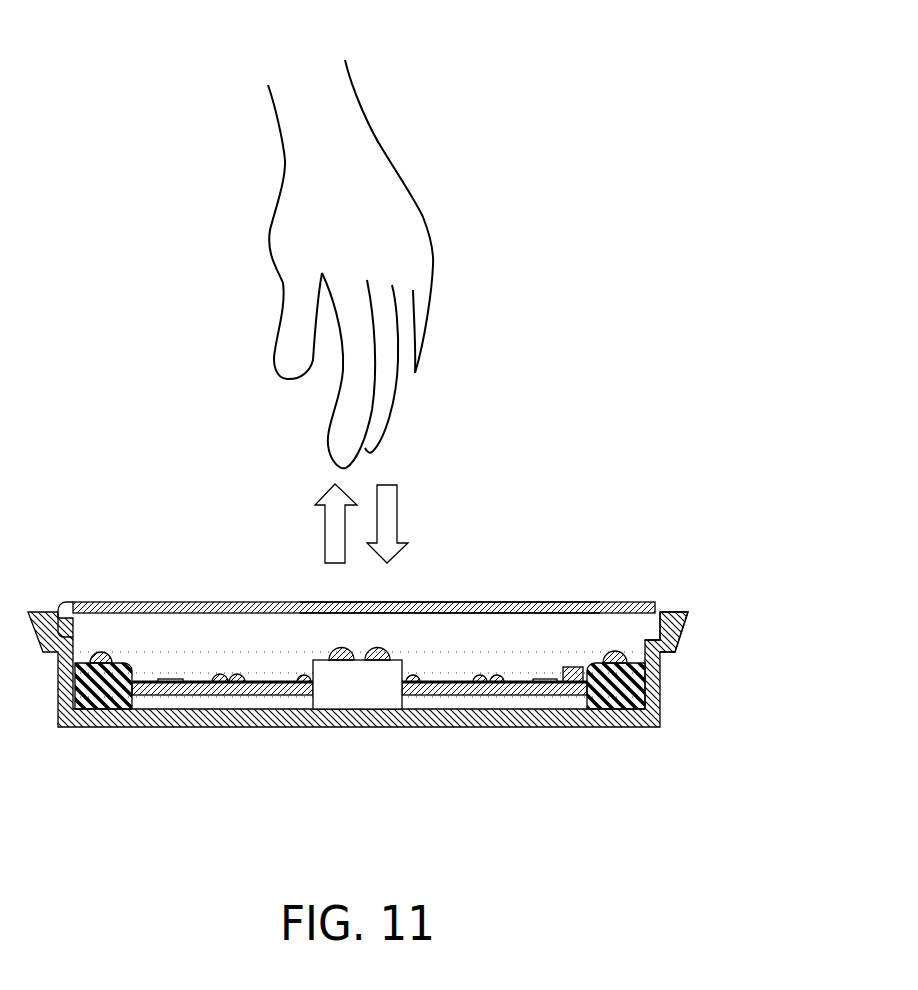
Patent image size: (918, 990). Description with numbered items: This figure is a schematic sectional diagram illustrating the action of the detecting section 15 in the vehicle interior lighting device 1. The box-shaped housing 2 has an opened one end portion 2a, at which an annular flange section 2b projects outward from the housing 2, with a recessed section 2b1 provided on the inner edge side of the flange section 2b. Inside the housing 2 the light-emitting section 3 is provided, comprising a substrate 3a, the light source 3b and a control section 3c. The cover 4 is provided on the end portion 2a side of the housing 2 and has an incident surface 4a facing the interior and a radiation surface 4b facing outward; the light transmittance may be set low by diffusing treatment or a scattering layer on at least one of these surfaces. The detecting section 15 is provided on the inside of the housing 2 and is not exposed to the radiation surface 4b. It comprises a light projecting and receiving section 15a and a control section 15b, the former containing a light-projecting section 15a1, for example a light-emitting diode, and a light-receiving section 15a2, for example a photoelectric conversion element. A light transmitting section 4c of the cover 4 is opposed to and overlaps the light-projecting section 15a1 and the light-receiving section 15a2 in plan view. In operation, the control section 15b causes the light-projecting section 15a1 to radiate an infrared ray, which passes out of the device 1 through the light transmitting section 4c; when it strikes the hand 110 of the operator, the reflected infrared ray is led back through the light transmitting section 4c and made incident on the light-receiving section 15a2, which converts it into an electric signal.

The vehicle interior lighting device 1 is at (73, 490).
The housing 2 is at (374, 668).
The end portion 2a is at (433, 630).
The flange section 2b is at (673, 613).
The recessed section 2b1 is at (658, 627).
The light-emitting section 3 is at (367, 651).
The substrate 3a is at (258, 688).
The light source 3b is at (227, 682).
The control section 3c is at (573, 670).
The cover 4 is at (356, 659).
The incident surface 4a is at (482, 613).
The radiation surface 4b is at (482, 602).
The light transmitting section 4c is at (88, 608).
The detecting section 15 is at (360, 625).
The light projecting and receiving section 15a is at (103, 693).
The light-projecting section 15a1 is at (342, 648).
The light-receiving section 15a2 is at (378, 648).
The control section 15b is at (168, 680).
The hand 110 is at (405, 200).